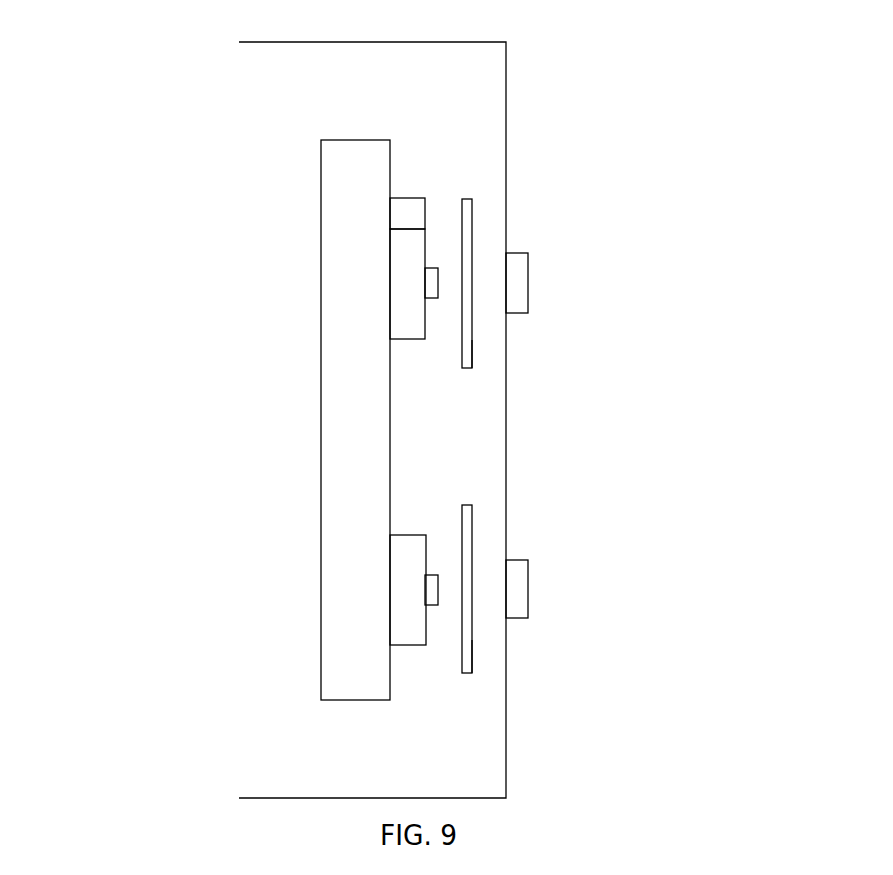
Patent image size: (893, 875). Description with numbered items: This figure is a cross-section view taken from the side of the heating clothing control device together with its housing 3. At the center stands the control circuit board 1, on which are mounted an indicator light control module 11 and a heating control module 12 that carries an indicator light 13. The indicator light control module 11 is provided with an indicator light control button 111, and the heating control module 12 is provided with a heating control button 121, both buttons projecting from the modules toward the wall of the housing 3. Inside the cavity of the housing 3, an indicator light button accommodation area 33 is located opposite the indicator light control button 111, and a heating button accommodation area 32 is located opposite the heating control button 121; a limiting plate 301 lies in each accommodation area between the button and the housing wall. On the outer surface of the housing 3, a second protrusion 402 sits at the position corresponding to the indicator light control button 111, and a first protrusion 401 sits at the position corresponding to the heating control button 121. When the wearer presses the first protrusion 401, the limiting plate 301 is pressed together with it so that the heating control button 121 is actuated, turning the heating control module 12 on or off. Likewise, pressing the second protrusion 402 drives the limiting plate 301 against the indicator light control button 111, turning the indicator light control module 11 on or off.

The control circuit board 1 is at (320, 482).
The housing 3 is at (483, 100).
The indicator light control module 11 is at (402, 275).
The heating control module 12 is at (407, 628).
The indicator light 13 is at (402, 217).
The indicator light control button 111 is at (432, 285).
The heating control button 121 is at (432, 585).
The heating button accommodation area 32 is at (493, 602).
The indicator light button accommodation area 33 is at (483, 192).
The limiting plate 301 is at (475, 352).
The first protrusion 401 is at (518, 577).
The second protrusion 402 is at (528, 283).